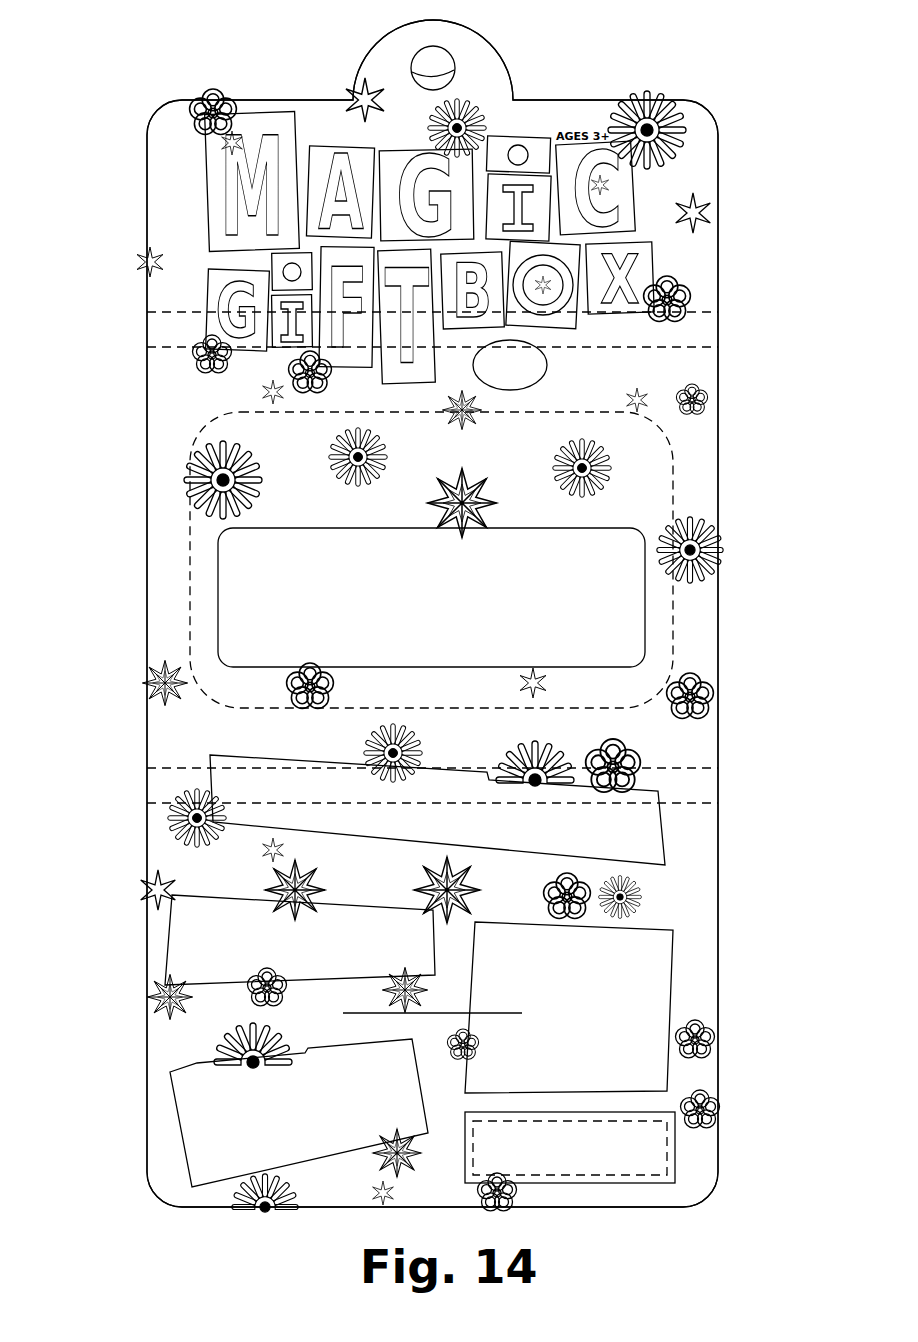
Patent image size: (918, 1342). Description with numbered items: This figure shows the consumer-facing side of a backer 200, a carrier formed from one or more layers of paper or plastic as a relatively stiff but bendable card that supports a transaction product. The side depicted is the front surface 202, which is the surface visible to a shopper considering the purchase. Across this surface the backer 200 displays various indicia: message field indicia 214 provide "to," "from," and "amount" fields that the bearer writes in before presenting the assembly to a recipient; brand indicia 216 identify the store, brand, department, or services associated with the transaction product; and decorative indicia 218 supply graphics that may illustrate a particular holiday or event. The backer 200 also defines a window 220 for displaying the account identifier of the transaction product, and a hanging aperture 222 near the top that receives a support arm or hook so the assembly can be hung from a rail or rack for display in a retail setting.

The backer 200 is at (683, 48).
The front surface 202 is at (698, 165).
The message field indicia 214 is at (196, 946).
The brand indicia 216 is at (640, 368).
The decorative indicia 218 is at (202, 779).
The window 220 is at (233, 622).
The hanging aperture 222 is at (448, 72).